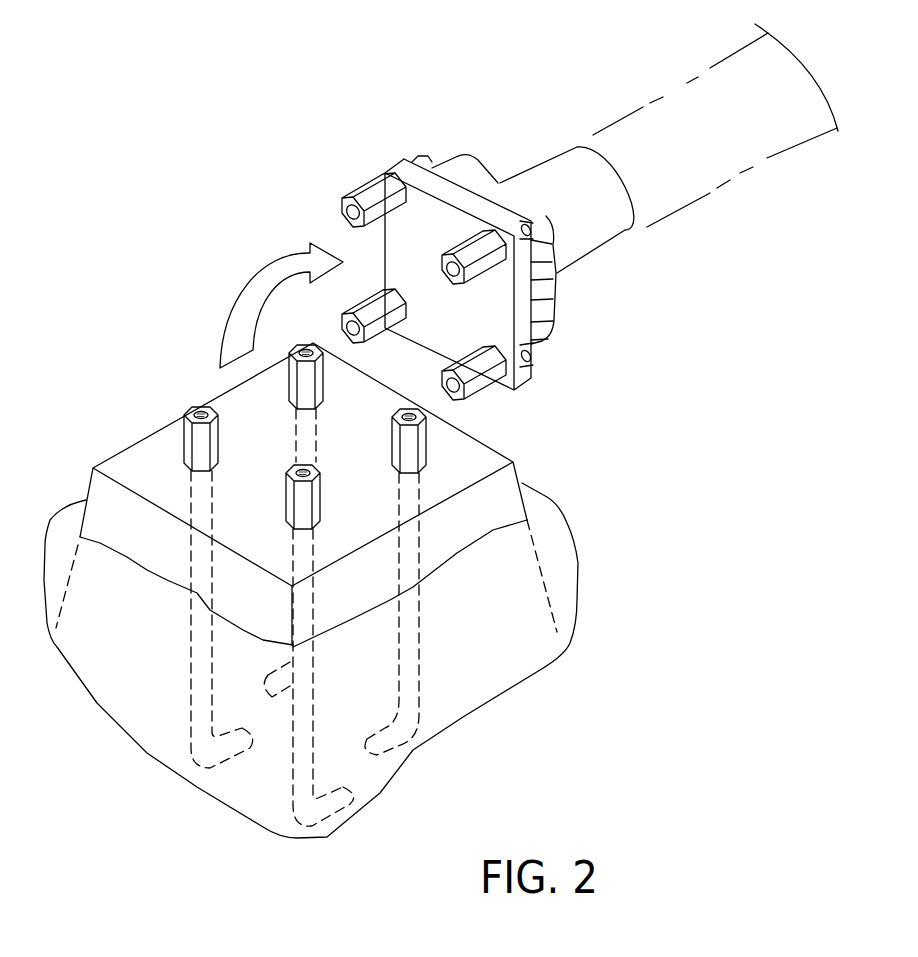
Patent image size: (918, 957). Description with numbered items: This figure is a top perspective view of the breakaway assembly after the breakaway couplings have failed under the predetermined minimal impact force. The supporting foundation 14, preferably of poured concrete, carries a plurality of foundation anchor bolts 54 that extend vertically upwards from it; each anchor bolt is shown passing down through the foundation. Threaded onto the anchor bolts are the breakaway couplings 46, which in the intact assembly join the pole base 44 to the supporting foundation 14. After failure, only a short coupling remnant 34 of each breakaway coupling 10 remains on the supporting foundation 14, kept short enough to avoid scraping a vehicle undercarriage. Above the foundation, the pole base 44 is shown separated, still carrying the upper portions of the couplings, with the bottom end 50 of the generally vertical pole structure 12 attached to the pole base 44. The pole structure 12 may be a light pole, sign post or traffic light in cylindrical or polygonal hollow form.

The breakaway coupling 10 is at (323, 168).
The generally vertical pole structure 12 is at (632, 233).
The supporting foundation 14 is at (520, 463).
The coupling remnant 34 is at (185, 408).
The pole base 44 is at (562, 327).
The breakaway couplings 46 is at (427, 437).
The bottom end 50 is at (537, 163).
The foundation anchor bolts 54 is at (180, 653).